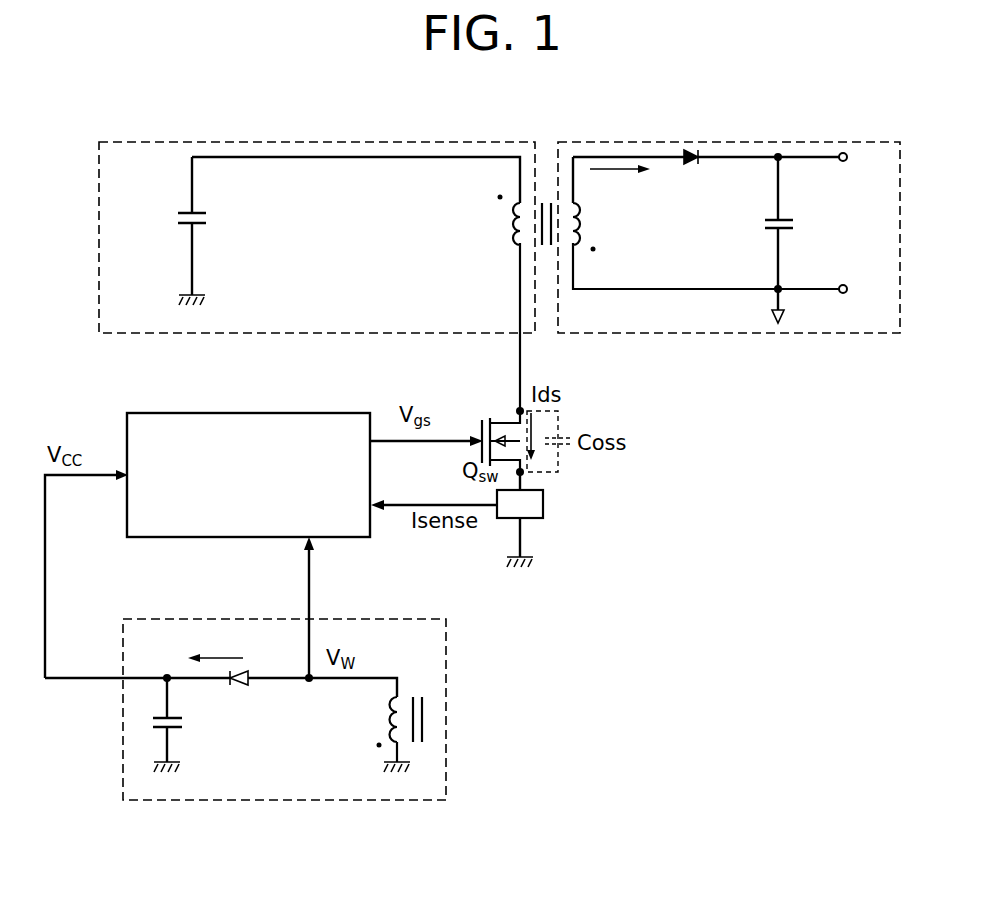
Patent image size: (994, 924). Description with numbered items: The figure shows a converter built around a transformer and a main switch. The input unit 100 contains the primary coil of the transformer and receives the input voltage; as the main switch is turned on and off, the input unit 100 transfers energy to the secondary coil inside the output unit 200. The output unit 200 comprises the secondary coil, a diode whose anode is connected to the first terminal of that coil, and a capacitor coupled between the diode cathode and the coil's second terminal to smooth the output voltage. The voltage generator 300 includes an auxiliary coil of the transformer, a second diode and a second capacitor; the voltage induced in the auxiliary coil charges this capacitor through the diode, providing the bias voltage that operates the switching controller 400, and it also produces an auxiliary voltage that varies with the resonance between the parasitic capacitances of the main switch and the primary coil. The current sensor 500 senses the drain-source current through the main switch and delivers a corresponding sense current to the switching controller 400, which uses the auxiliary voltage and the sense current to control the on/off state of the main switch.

The input unit 100 is at (437, 141).
The output unit 200 is at (860, 334).
The voltage generator 300 is at (446, 678).
The switching controller 400 is at (307, 412).
The current sensor 500 is at (543, 504).